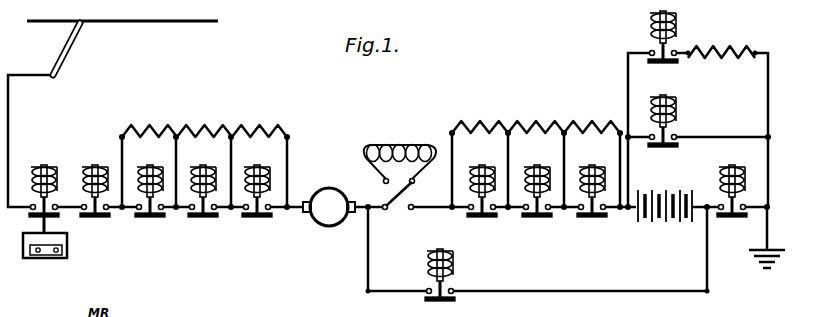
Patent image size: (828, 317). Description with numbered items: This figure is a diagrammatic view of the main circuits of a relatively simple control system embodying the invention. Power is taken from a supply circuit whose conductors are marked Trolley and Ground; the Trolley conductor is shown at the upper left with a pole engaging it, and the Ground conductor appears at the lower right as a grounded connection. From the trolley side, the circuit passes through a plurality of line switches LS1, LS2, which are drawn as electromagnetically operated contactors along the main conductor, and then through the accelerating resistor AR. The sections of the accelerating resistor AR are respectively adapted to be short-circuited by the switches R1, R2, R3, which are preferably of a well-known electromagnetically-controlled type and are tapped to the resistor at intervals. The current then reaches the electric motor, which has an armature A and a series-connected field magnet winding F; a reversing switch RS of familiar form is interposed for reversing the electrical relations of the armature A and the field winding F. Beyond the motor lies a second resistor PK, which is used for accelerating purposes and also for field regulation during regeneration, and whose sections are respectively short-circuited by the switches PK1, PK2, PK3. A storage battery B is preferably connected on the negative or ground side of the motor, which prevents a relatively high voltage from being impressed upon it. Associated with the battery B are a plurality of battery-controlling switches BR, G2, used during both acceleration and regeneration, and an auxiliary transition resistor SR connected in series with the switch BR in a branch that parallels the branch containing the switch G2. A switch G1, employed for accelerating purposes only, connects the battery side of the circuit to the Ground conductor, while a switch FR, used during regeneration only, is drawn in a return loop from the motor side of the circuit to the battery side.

The trolley conductor Trolley is at (122, 48).
The accelerating resistor AR is at (204, 153).
The line switch LS1 is at (45, 220).
The line switch LS2 is at (96, 202).
The accelerating resistor switch R1 is at (150, 202).
The accelerating resistor switch R2 is at (203, 202).
The accelerating resistor switch R3 is at (257, 202).
The armature A is at (329, 207).
The reversing switch RS is at (399, 206).
The series-connected field magnet winding F is at (400, 145).
The regeneration switch FR is at (537, 254).
The second resistor PK is at (536, 153).
The resistor switch PK1 is at (483, 200).
The resistor switch PK2 is at (539, 200).
The resistor switch PK3 is at (594, 200).
The storage battery B is at (665, 216).
The accelerating switch G1 is at (743, 191).
The battery-controlling switch G2 is at (698, 121).
The battery-controlling switch BR is at (647, 37).
The auxiliary transition resistor SR is at (723, 116).
The ground conductor Ground is at (759, 250).